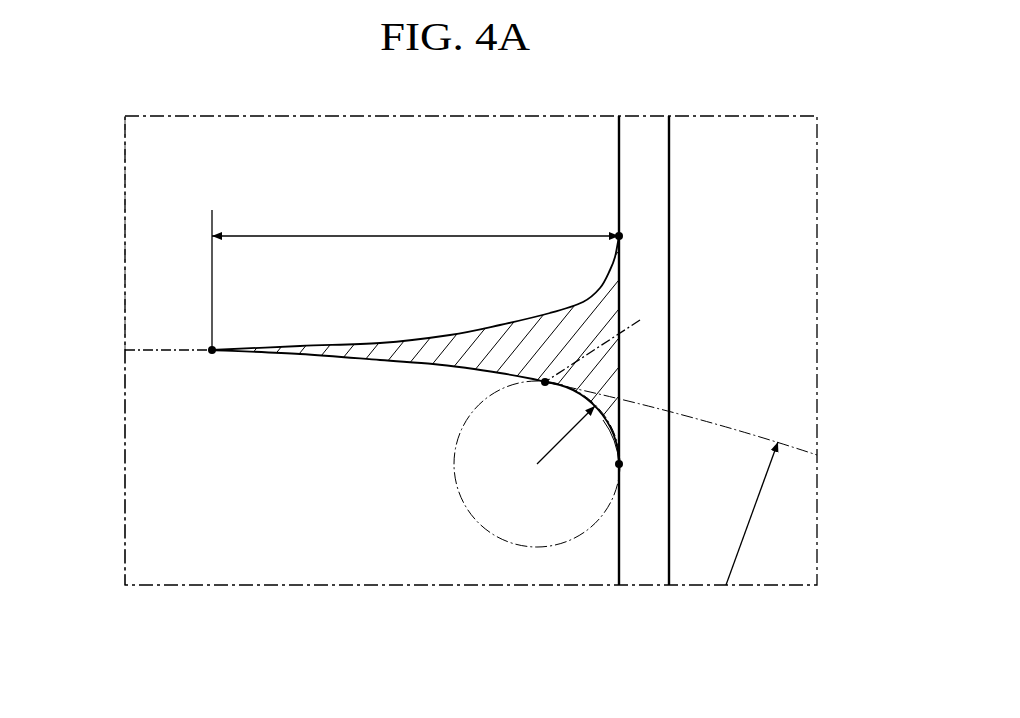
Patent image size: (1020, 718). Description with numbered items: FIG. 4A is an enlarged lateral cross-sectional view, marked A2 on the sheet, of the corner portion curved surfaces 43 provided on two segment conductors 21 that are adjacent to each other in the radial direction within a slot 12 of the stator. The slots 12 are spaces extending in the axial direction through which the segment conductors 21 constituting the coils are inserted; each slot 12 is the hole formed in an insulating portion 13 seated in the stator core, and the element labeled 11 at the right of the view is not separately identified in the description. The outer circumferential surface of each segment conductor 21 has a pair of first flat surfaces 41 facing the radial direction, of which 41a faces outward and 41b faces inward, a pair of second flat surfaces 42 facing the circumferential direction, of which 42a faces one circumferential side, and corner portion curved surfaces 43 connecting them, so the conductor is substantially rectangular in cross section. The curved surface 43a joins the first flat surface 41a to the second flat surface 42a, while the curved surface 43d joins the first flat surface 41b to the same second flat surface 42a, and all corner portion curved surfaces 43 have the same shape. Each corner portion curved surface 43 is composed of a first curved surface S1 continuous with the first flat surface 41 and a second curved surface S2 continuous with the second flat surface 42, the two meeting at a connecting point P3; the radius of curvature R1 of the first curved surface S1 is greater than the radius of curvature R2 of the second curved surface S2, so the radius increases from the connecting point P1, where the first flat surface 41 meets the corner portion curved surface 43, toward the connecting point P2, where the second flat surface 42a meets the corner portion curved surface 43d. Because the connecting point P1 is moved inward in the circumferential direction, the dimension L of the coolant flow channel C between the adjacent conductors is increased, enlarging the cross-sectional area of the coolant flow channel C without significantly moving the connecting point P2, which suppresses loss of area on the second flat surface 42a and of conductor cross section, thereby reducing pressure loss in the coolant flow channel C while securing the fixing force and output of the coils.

The base member 11 is at (736, 150).
The slot 12 is at (668, 204).
The insulating portion 13 is at (643, 150).
The segment conductor 21 is at (106, 261).
The first flat surface 41 is at (191, 350).
The first flat surface facing outward 41a is at (175, 348).
The first flat surface facing inward 41b is at (150, 352).
The second flat surface 42 is at (709, 330).
The second flat surface facing one circumferential side 42a is at (619, 188).
The corner portion curved surface 43 is at (483, 294).
The corner portion curved surface 43a is at (554, 382).
The corner portion curved surface 43d is at (583, 306).
The enlarged region A2 is at (327, 116).
The coolant flow channel C is at (546, 337).
The dimension of the coolant flow channel L is at (417, 278).
The connecting point P1 is at (211, 357).
The connecting point P2 is at (619, 464).
The connecting point P3 is at (545, 382).
The radius of curvature R1 is at (681, 483).
The radius of curvature R2 is at (537, 464).
The first curved surface S1 is at (640, 320).
The second curved surface S2 is at (603, 420).